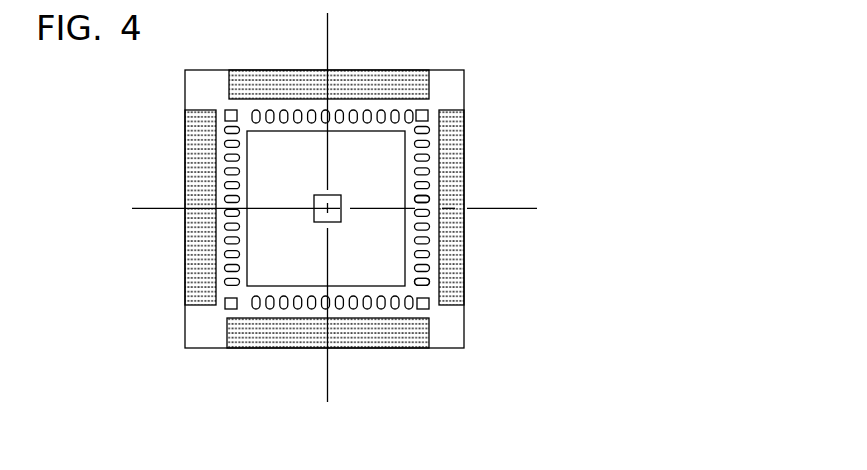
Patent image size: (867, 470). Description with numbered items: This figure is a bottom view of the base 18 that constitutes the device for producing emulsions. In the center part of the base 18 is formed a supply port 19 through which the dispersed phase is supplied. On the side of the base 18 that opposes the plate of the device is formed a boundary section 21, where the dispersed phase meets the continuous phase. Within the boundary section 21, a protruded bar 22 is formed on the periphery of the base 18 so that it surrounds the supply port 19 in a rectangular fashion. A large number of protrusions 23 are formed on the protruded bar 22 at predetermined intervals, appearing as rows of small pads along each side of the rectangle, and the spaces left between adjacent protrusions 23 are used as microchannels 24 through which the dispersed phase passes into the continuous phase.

The base 18 is at (185, 148).
The supply port 19 is at (333, 202).
The boundary section 21 is at (266, 108).
The protruded bar 22 is at (230, 266).
The protrusions 23 is at (427, 198).
The microchannels 24 is at (427, 152).